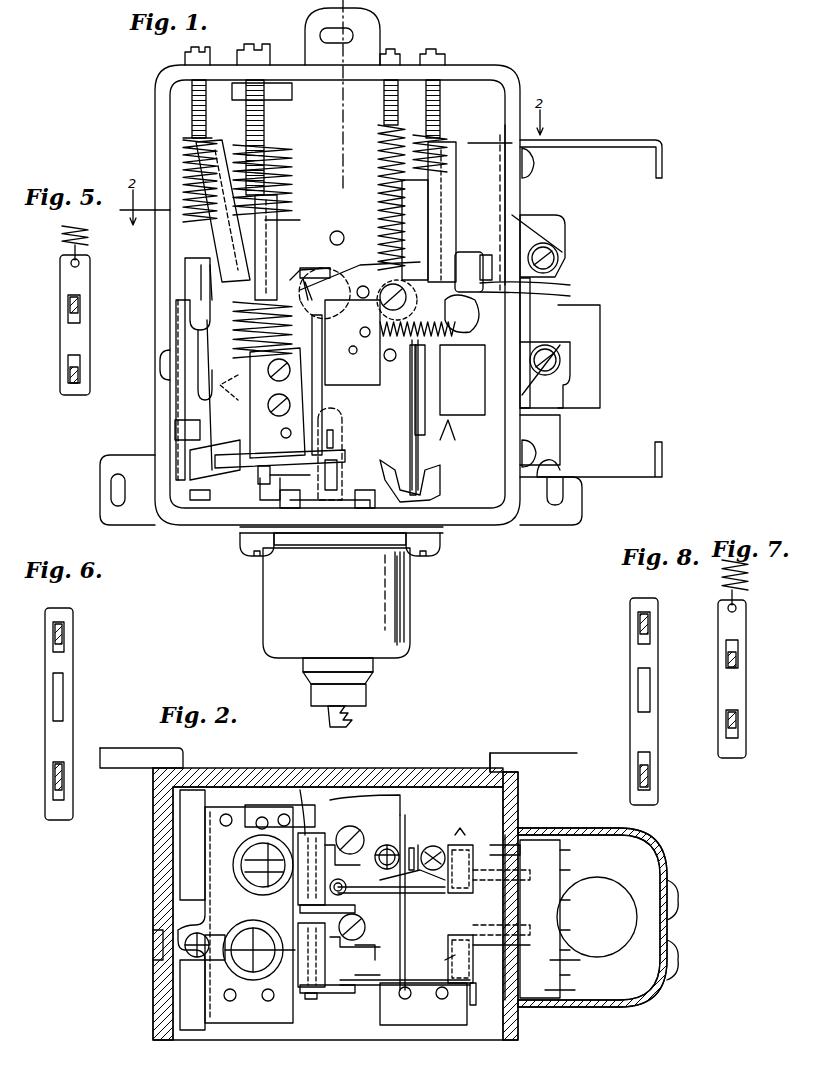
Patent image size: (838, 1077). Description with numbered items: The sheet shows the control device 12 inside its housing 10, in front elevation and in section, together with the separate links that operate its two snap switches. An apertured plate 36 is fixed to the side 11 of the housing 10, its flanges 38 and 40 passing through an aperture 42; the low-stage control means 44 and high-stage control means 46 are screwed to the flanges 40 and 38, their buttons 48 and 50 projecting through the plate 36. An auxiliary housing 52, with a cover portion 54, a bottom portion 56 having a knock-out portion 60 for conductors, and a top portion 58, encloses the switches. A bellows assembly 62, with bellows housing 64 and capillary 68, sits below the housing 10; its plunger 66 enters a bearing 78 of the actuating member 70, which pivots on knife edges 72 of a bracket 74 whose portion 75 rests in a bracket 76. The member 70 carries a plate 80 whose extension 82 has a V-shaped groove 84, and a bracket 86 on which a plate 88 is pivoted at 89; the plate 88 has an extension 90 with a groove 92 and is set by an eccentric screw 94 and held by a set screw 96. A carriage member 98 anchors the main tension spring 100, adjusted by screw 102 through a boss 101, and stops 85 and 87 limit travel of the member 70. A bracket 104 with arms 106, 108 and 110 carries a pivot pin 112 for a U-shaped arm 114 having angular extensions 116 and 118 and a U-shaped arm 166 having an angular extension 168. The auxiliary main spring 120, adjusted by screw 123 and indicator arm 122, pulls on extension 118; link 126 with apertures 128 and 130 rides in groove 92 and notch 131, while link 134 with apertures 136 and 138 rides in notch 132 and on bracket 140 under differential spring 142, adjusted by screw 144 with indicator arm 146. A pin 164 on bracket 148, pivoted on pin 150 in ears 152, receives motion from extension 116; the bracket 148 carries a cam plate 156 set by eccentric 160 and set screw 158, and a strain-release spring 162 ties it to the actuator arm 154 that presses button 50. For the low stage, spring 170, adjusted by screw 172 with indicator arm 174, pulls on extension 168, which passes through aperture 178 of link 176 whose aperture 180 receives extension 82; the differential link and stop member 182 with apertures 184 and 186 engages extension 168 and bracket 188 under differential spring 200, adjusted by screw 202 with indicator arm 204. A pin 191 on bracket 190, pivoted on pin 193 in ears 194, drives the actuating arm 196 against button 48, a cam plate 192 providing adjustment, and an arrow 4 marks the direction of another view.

In FIG. 1, the motor assembly 4 is at (440, 569).
In FIG. 1, the housing 10 is at (163, 113).
In FIG. 2, the housing 10 is at (450, 768).
In FIG. 1, the side of housing 11 is at (515, 425).
In FIG. 2, the side of housing 11 is at (515, 1012).
In FIG. 1, the control device 12 is at (458, 497).
In FIG. 2, the control device 12 is at (362, 1034).
In FIG. 1, the apertured plate 36 is at (490, 360).
In FIG. 2, the apertured plate 36 is at (520, 933).
In FIG. 1, the flange 38 is at (545, 400).
In FIG. 2, the flange 38 is at (575, 993).
In FIG. 2, the flange 40 is at (562, 828).
In FIG. 1, the aperture 42 is at (515, 222).
In FIG. 2, the aperture 42 is at (520, 822).
In FIG. 2, the low-stage control means 44 is at (552, 865).
In FIG. 2, the high-stage control means 46 is at (575, 968).
In FIG. 2, the button 48 is at (535, 872).
In FIG. 1, the button 50 is at (485, 255).
In FIG. 2, the button 50 is at (520, 950).
In FIG. 2, the auxiliary housing 52 is at (681, 922).
In FIG. 2, the removable cover portion 54 is at (660, 985).
In FIG. 1, the bottom portion 56 is at (640, 477).
In FIG. 2, the bottom portion 56 is at (655, 870).
In FIG. 1, the top portion 58 is at (618, 140).
In FIG. 2, the knock-out portion 60 is at (610, 880).
In FIG. 1, the bellows assembly 62 is at (427, 616).
In FIG. 1, the bellows housing 64 is at (397, 640).
In FIG. 1, the plunger 66 is at (330, 512).
In FIG. 1, the capillary 68 is at (350, 718).
In FIG. 1, the actuating member 70 is at (252, 464).
In FIG. 2, the actuating member 70 is at (200, 855).
In FIG. 1, the knife edges 72 is at (290, 477).
In FIG. 1, the bracket 74 is at (312, 322).
In FIG. 2, the bracket 74 is at (370, 795).
In FIG. 1, the bracket portion 75 is at (345, 437).
In FIG. 1, the bracket 76 is at (300, 470).
In FIG. 1, the bearing 78 is at (330, 475).
In FIG. 1, the plate 80 is at (412, 435).
In FIG. 2, the plate 80 is at (398, 900).
In FIG. 1, the extension 82 is at (420, 470).
In FIG. 8, the extension 82 is at (648, 778).
In FIG. 1, the V-shaped groove 84 is at (437, 485).
In FIG. 1, the stop member 85 is at (208, 495).
In FIG. 1, the bracket 86 is at (255, 383).
In FIG. 1, the stop 87 is at (192, 420).
In FIG. 1, the plate 88 is at (238, 400).
In FIG. 1, the pivot 89 is at (281, 433).
In FIG. 1, the extension 90 is at (195, 460).
In FIG. 6, the extension 90 is at (55, 777).
In FIG. 1, the V-shaped groove 92 is at (207, 470).
In FIG. 1, the eccentric screw 94 is at (293, 390).
In FIG. 1, the set screw 96 is at (268, 372).
In FIG. 1, the carriage member 98 is at (262, 495).
In FIG. 2, the carriage member 98 is at (241, 866).
In FIG. 1, the main tension spring 100 is at (292, 150).
In FIG. 2, the main tension spring 100 is at (250, 840).
In FIG. 1, the boss 101 is at (285, 95).
In FIG. 1, the adjustment screw 102 is at (275, 118).
In FIG. 1, the bracket 104 is at (325, 364).
In FIG. 2, the bracket 104 is at (275, 975).
In FIG. 1, the arm 106 is at (340, 260).
In FIG. 2, the arm 106 is at (322, 993).
In FIG. 2, the arm 108 is at (372, 918).
In FIG. 2, the arm 110 is at (345, 820).
In FIG. 1, the pivot pin 112 is at (318, 270).
In FIG. 2, the pivot pin 112 is at (345, 960).
In FIG. 1, the U-shaped arm 114 is at (307, 262).
In FIG. 2, the U-shaped arm 114 is at (312, 1000).
In FIG. 1, the angular extension 116 is at (345, 268).
In FIG. 2, the angular extension 116 is at (380, 945).
In FIG. 1, the angular extension 118 is at (190, 258).
In FIG. 5, the angular extension 118 is at (80, 307).
In FIG. 6, the angular extension 118 is at (55, 630).
In FIG. 2, the angular extension 118 is at (298, 905).
In FIG. 1, the auxiliary main spring 120 is at (280, 205).
In FIG. 2, the auxiliary main spring 120 is at (222, 975).
In FIG. 1, the guide and indicator arm 122 is at (300, 220).
In FIG. 1, the adjustment screw 123 is at (265, 55).
In FIG. 1, the link 126 is at (230, 375).
In FIG. 6, the link 126 is at (63, 662).
In FIG. 2, the link 126 is at (235, 895).
In FIG. 6, the aperture 128 is at (60, 797).
In FIG. 6, the aperture 130 is at (60, 645).
In FIG. 1, the notch 131 is at (215, 255).
In FIG. 1, the notch 132 is at (213, 305).
In FIG. 1, the link 134 is at (192, 318).
In FIG. 5, the link 134 is at (70, 343).
In FIG. 2, the link 134 is at (208, 895).
In FIG. 5, the aperture 136 is at (68, 315).
In FIG. 5, the aperture 138 is at (68, 368).
In FIG. 1, the bracket 140 is at (178, 350).
In FIG. 5, the bracket 140 is at (78, 378).
In FIG. 2, the bracket 140 is at (160, 945).
In FIG. 1, the differential tension spring 142 is at (183, 155).
In FIG. 5, the differential tension spring 142 is at (62, 233).
In FIG. 2, the differential tension spring 142 is at (197, 960).
In FIG. 1, the adjustment screw 144 is at (205, 57).
In FIG. 1, the guide and indicator arm 146 is at (218, 150).
In FIG. 1, the bracket 148 is at (372, 336).
In FIG. 2, the bracket 148 is at (370, 985).
In FIG. 1, the pivot pin 150 is at (535, 343).
In FIG. 2, the pivot pin 150 is at (476, 995).
In FIG. 1, the ears 152 is at (560, 285).
In FIG. 2, the ears 152 is at (448, 938).
In FIG. 1, the switch actuator arm 154 is at (475, 320).
In FIG. 2, the switch actuator arm 154 is at (448, 965).
In FIG. 1, the cam plate 156 is at (470, 232).
In FIG. 2, the cam plate 156 is at (426, 950).
In FIG. 1, the set screw 158 is at (358, 220).
In FIG. 2, the set screw 158 is at (408, 1000).
In FIG. 1, the eccentric 160 is at (380, 320).
In FIG. 2, the eccentric 160 is at (388, 1025).
In FIG. 1, the tension spring 162 is at (383, 363).
In FIG. 1, the pin 164 is at (372, 278).
In FIG. 2, the pin 164 is at (390, 968).
In FIG. 2, the U-shaped arm 166 is at (304, 790).
In FIG. 7, the angular extension 168 is at (738, 658).
In FIG. 8, the angular extension 168 is at (648, 620).
In FIG. 2, the angular extension 168 is at (411, 845).
In FIG. 1, the auxiliary main tension spring 170 is at (378, 198).
In FIG. 2, the auxiliary main tension spring 170 is at (390, 834).
In FIG. 1, the adjustment screw 172 is at (392, 53).
In FIG. 1, the guide and indicator arm 174 is at (410, 175).
In FIG. 1, the link 176 is at (437, 424).
In FIG. 8, the link 176 is at (650, 722).
In FIG. 2, the link 176 is at (410, 818).
In FIG. 8, the aperture 178 is at (645, 637).
In FIG. 8, the aperture 180 is at (645, 757).
In FIG. 1, the differential link and stop member 182 is at (427, 420).
In FIG. 7, the differential link and stop member 182 is at (735, 680).
In FIG. 2, the differential link and stop member 182 is at (438, 845).
In FIG. 7, the aperture 184 is at (733, 645).
In FIG. 7, the aperture 186 is at (733, 735).
In FIG. 1, the bracket 188 is at (456, 430).
In FIG. 7, the bracket 188 is at (735, 718).
In FIG. 2, the bracket 190 is at (412, 891).
In FIG. 2, the pin 191 is at (350, 888).
In FIG. 2, the cam plate 192 is at (426, 927).
In FIG. 2, the pivot pin 193 is at (463, 832).
In FIG. 2, the ears 194 is at (474, 840).
In FIG. 2, the actuating arm 196 is at (520, 850).
In FIG. 1, the differential tension spring 200 is at (415, 130).
In FIG. 7, the differential tension spring 200 is at (745, 568).
In FIG. 2, the differential tension spring 200 is at (420, 840).
In FIG. 1, the adjustment screw 202 is at (440, 93).
In FIG. 1, the guide or indicator arm 204 is at (445, 125).